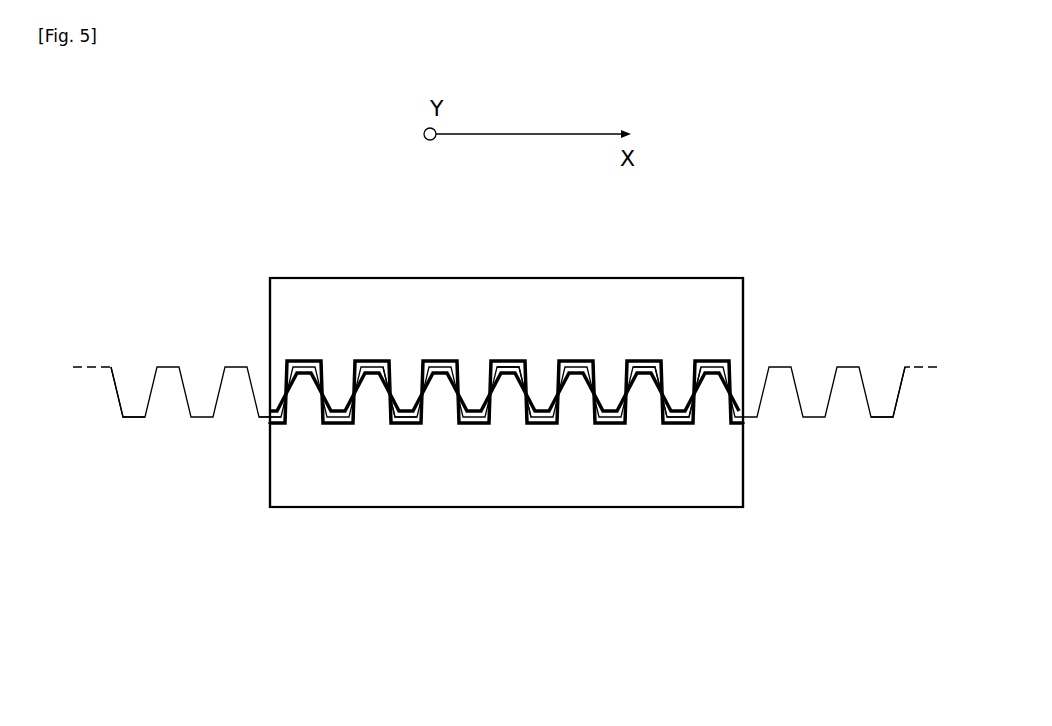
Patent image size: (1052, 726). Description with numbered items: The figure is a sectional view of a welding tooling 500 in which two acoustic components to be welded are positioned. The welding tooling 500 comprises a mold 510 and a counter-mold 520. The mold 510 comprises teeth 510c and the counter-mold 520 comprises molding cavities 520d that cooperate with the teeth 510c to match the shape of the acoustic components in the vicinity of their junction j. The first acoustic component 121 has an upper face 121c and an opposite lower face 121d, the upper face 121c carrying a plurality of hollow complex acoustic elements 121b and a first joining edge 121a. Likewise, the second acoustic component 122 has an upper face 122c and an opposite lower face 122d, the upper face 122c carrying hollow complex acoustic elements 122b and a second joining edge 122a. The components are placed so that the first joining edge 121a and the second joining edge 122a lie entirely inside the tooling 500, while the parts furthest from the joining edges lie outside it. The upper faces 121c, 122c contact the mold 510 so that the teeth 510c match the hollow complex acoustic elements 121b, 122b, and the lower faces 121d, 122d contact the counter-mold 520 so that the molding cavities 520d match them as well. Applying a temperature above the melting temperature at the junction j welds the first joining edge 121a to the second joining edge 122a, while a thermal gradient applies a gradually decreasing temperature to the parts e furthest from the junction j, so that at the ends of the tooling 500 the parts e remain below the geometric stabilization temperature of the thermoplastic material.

The welding tooling 500 is at (320, 266).
The mold 510 is at (680, 290).
The teeth 510c is at (398, 366).
The counter-mold 520 is at (683, 495).
The molding cavities 520d is at (565, 412).
The first acoustic component 121 is at (170, 366).
The first joining edge 121a is at (505, 360).
The hollow complex acoustic elements 121b is at (132, 395).
The upper face 121c is at (266, 426).
The lower face 121d is at (403, 424).
The second acoustic component 122 is at (803, 374).
The second joining edge 122a is at (522, 356).
The hollow complex acoustic elements 122b is at (882, 393).
The upper face 122c is at (653, 363).
The lower face 122d is at (698, 412).
The junction j is at (509, 359).
The parts furthest from the junction e is at (262, 423).